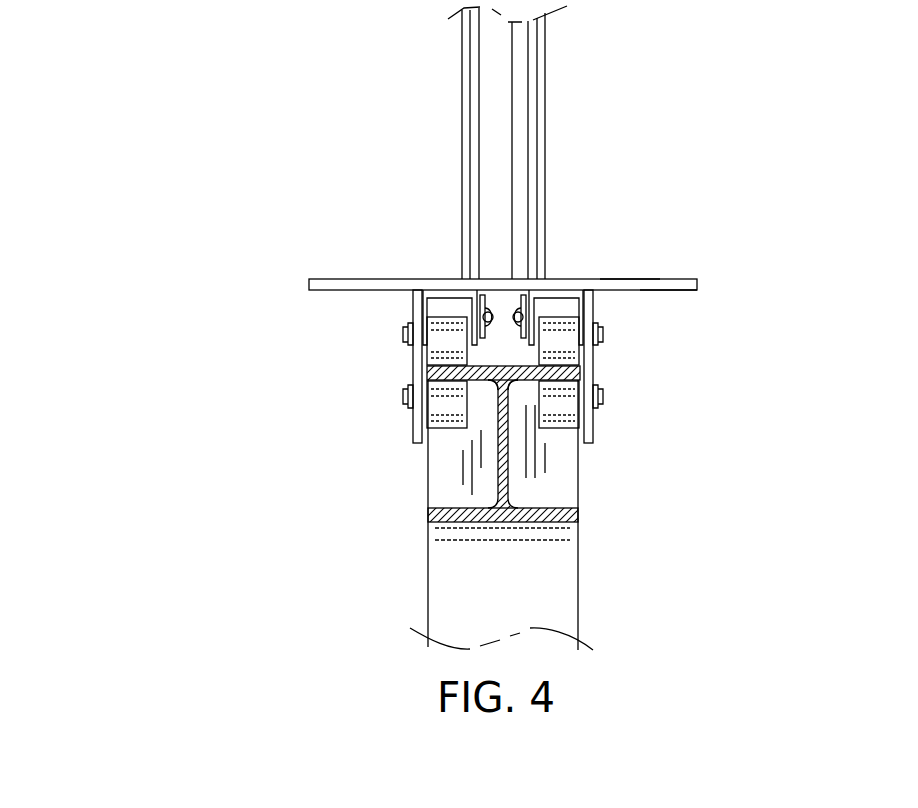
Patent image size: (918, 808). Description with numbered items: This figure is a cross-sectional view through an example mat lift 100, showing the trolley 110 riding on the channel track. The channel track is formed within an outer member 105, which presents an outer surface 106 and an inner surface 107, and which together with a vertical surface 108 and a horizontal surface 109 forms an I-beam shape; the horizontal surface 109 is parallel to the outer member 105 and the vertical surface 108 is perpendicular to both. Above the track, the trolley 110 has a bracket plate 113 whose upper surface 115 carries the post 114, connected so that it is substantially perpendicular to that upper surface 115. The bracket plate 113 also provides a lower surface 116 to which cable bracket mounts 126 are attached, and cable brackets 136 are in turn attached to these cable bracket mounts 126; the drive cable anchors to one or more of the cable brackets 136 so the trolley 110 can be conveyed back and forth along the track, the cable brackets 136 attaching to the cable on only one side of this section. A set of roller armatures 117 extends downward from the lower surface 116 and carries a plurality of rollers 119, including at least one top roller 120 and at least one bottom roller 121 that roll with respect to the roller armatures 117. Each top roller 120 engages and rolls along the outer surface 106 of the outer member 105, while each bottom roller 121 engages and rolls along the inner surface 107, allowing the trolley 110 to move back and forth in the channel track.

The connection assembly 100 is at (146, 433).
The outer member 105 is at (432, 370).
The outer surface 106 is at (496, 368).
The inner surface 107 is at (474, 381).
The vertical surface 108 is at (510, 454).
The horizontal surface 109 is at (578, 497).
The trolley 110 is at (270, 37).
The bracket plate 113 is at (698, 285).
The post 114 is at (545, 128).
The upper surface 115 is at (652, 279).
The lower surface 116 is at (677, 291).
The roller armatures 117 is at (592, 308).
The rollers 119 is at (563, 347).
The top roller 120 is at (447, 315).
The bottom roller 121 is at (445, 416).
The cable bracket mounts 126 is at (549, 290).
The cable brackets 136 is at (513, 312).